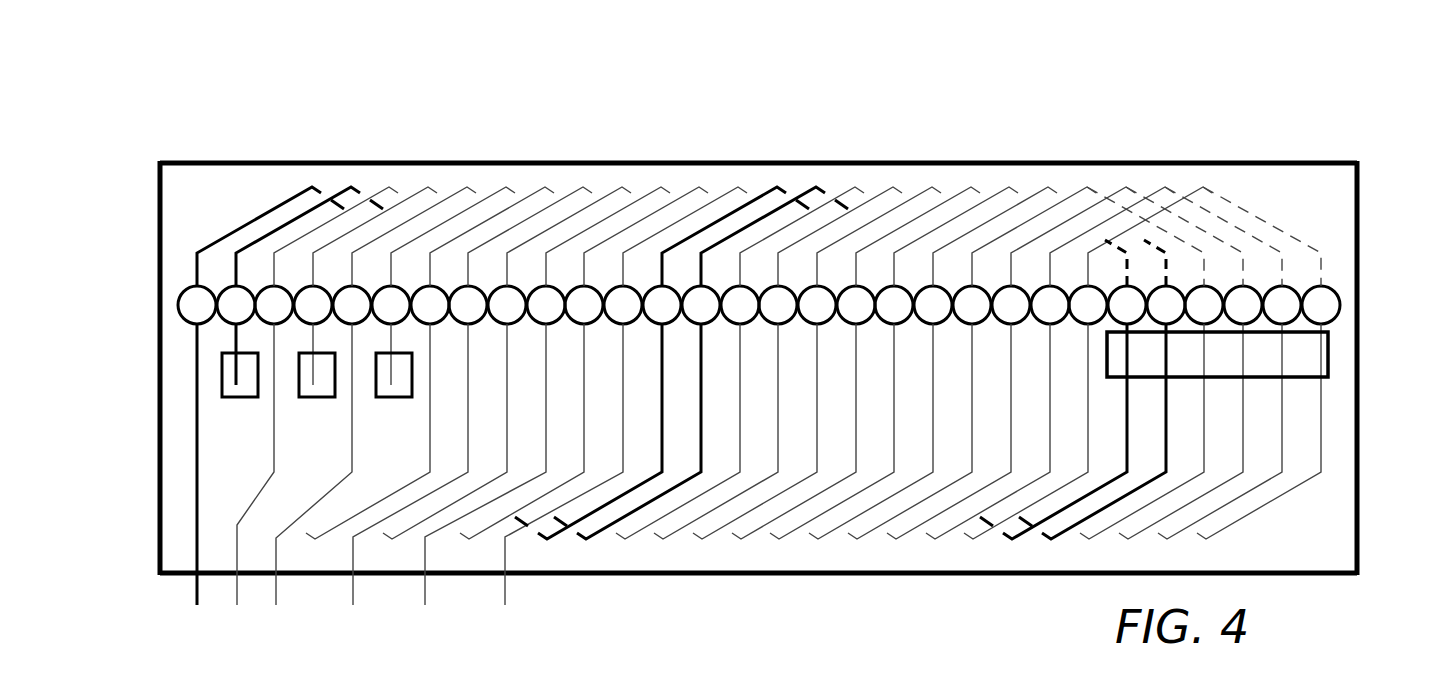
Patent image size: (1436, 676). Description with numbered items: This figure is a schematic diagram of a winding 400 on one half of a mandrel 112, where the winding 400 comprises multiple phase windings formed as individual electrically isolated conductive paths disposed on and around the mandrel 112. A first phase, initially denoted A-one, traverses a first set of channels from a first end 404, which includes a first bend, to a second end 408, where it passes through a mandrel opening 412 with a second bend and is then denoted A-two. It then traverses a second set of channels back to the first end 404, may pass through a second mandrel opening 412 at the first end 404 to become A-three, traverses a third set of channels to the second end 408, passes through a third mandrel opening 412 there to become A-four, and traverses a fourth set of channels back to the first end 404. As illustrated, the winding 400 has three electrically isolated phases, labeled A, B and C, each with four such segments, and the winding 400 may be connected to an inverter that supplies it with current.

The mandrel 112 is at (603, 132).
The winding 400 is at (198, 418).
The first end 404 is at (160, 442).
The second end 408 is at (1357, 437).
The mandrel opening 412 is at (1328, 354).